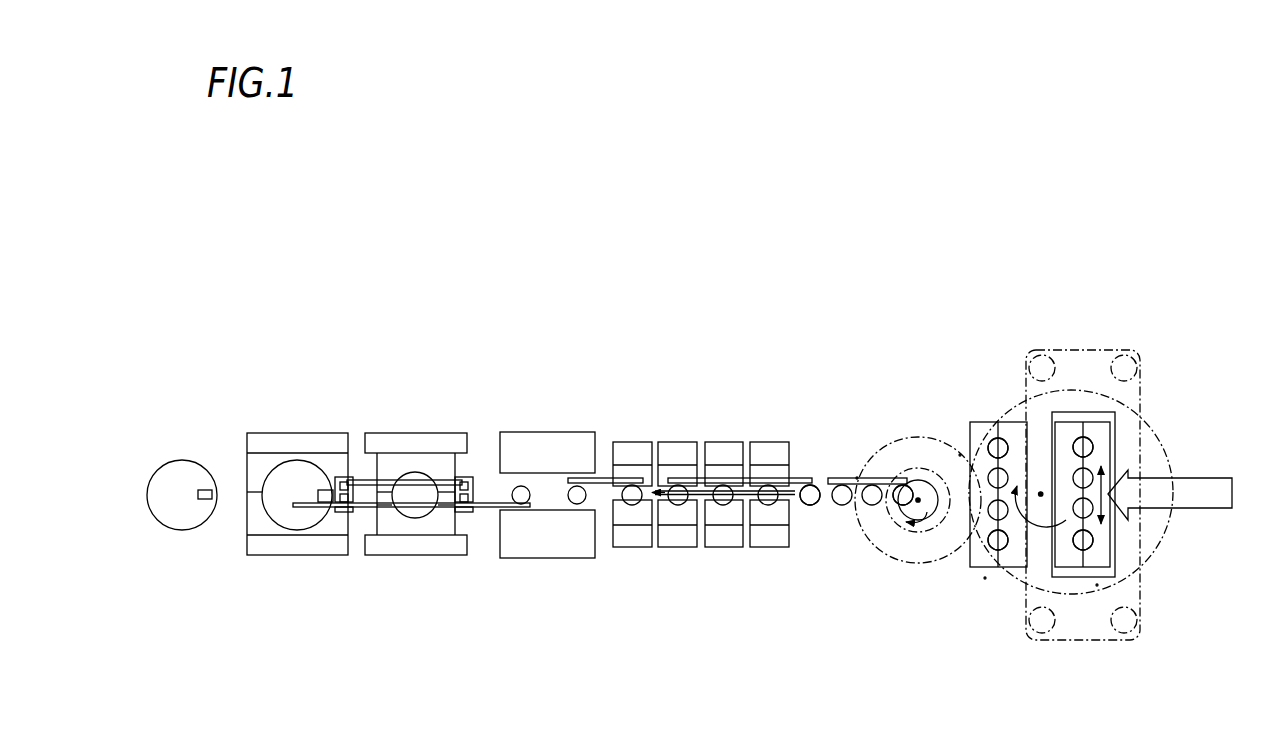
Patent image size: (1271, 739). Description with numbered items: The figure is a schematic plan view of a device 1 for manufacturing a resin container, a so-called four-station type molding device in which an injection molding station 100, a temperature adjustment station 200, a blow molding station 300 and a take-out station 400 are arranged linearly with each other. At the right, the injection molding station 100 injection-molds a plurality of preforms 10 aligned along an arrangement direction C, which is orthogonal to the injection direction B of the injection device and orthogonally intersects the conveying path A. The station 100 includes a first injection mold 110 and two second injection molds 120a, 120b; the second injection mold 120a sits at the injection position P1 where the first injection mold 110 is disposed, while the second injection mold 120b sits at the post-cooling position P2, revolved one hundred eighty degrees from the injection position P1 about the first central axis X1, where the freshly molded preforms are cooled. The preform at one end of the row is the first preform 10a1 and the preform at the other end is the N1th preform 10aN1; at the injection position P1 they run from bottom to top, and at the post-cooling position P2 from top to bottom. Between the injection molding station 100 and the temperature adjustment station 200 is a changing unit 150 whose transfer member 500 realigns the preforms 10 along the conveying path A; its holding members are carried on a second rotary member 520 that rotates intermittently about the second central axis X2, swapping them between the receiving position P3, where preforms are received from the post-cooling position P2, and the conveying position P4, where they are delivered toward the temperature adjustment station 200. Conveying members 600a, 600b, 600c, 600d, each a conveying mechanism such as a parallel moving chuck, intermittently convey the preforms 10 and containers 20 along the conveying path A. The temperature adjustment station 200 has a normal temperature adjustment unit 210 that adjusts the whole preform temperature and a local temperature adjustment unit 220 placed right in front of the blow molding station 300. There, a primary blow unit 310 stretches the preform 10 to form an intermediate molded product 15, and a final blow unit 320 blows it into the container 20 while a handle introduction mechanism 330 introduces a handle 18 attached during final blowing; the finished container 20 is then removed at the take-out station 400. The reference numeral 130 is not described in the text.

The device for manufacturing a resin container 1 is at (1120, 198).
The preform 10 is at (838, 506).
The first preform 10a1 is at (801, 483).
The N1th preform 10aN1 is at (897, 507).
The intermediate molded product 15 is at (400, 477).
The handle 18 is at (207, 490).
The resin container 20 is at (158, 462).
The injection molding station 100 is at (1077, 293).
The first injection mold 110 is at (1115, 411).
The second injection mold 120a is at (1107, 578).
The second injection mold 120b is at (1005, 569).
The rotary table 130 is at (1072, 393).
The changing unit 150 is at (917, 302).
The temperature adjustment station 200 is at (643, 288).
The normal temperature adjustment unit 210 is at (722, 433).
The local temperature adjustment unit 220 is at (562, 425).
The blow molding station 300 is at (363, 277).
The primary blow unit 310 is at (414, 410).
The final blow unit 320 is at (305, 411).
The handle introduction mechanism 330 is at (445, 477).
The take-out station 400 is at (185, 440).
The transfer member 500 is at (928, 427).
The second rotary member 520 is at (915, 468).
The conveying member 600a is at (828, 477).
The conveying member 600b is at (797, 505).
The conveying member 600c is at (605, 478).
The conveying member 600d is at (483, 508).
The conveying path A is at (728, 505).
The injection direction B is at (1193, 482).
The arrangement direction C is at (1103, 474).
The injection position P1 is at (1097, 590).
The post-cooling position P2 is at (983, 583).
The receiving position P3 is at (960, 450).
The conveying position P4 is at (857, 470).
The first central axis X1 is at (1041, 490).
The second central axis X2 is at (918, 504).